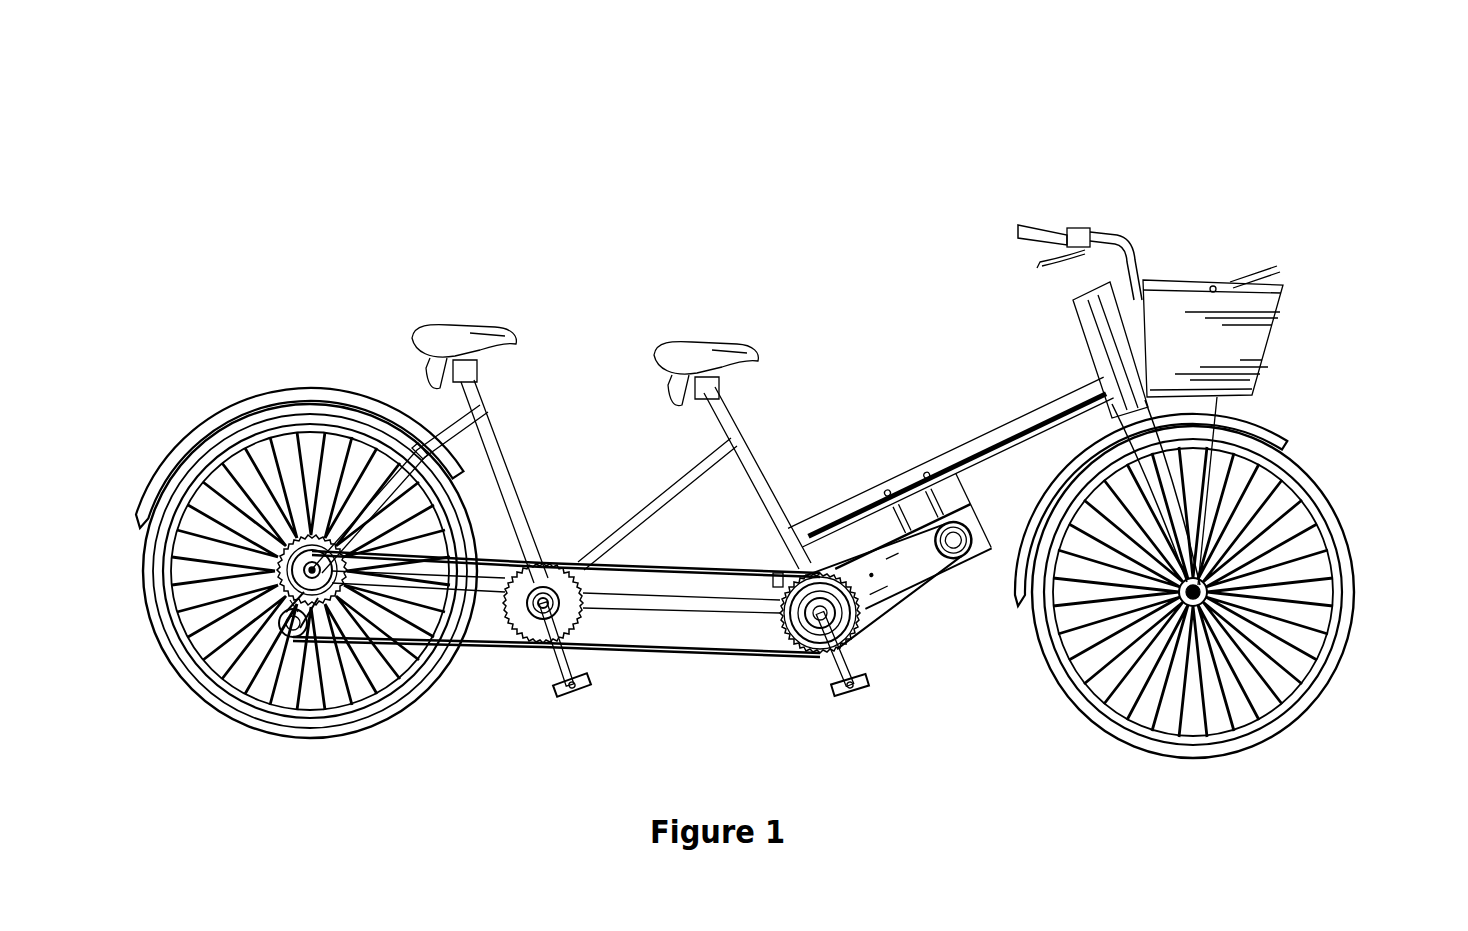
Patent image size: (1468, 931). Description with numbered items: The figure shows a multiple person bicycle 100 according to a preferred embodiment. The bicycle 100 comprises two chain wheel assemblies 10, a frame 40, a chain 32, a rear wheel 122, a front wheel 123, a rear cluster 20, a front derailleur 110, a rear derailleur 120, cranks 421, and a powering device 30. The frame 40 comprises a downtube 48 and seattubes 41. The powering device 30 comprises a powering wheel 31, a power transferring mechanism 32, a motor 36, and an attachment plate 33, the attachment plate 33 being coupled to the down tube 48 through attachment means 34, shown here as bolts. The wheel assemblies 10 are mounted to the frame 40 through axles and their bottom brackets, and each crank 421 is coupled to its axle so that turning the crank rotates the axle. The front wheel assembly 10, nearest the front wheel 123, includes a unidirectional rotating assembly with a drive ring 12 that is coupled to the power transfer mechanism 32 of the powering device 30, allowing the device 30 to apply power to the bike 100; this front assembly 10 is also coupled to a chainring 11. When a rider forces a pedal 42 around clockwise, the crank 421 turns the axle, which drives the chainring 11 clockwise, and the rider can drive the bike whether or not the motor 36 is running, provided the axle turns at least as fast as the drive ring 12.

The bicycle 100 is at (920, 330).
The chain wheel assembly 10 is at (676, 600).
The chainring 11 is at (550, 584).
The drive ring 12 is at (820, 640).
The rear cluster 20 is at (262, 675).
The rear derailleur 120 is at (308, 617).
The rear wheel 122 is at (295, 637).
The front wheel 123 is at (1290, 492).
The powering device 30 is at (921, 562).
The powering wheel 31 is at (953, 540).
The chain / power transferring mechanism 32 is at (627, 647).
The attachment plate 33 is at (902, 536).
The attachment means 34 is at (915, 502).
The motor 36 is at (888, 580).
The frame 40 is at (970, 500).
The seattube 41 is at (507, 468).
The pedal 42 is at (563, 697).
The crank 421 is at (560, 658).
The downtube 48 is at (957, 465).
The front derailleur 110 is at (790, 577).